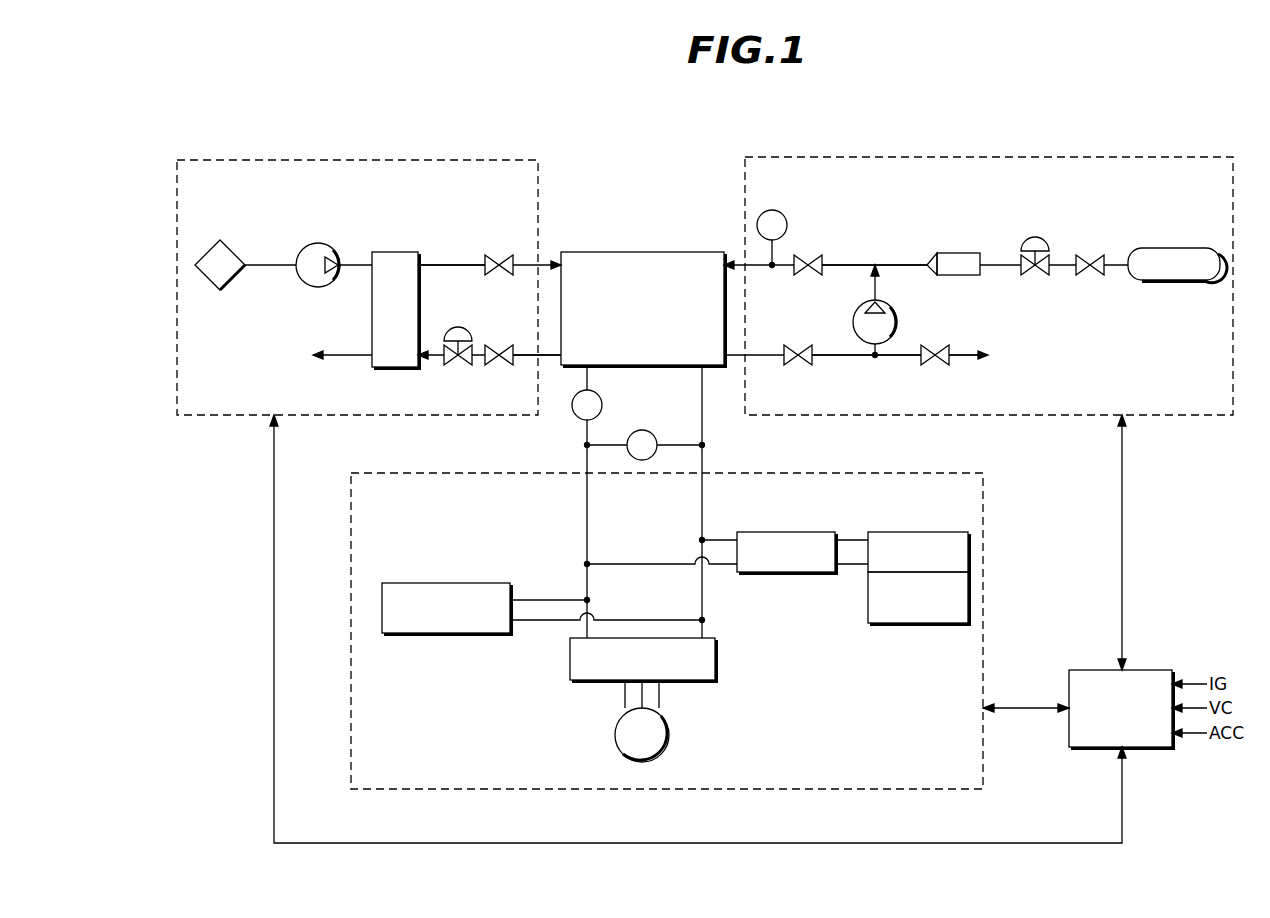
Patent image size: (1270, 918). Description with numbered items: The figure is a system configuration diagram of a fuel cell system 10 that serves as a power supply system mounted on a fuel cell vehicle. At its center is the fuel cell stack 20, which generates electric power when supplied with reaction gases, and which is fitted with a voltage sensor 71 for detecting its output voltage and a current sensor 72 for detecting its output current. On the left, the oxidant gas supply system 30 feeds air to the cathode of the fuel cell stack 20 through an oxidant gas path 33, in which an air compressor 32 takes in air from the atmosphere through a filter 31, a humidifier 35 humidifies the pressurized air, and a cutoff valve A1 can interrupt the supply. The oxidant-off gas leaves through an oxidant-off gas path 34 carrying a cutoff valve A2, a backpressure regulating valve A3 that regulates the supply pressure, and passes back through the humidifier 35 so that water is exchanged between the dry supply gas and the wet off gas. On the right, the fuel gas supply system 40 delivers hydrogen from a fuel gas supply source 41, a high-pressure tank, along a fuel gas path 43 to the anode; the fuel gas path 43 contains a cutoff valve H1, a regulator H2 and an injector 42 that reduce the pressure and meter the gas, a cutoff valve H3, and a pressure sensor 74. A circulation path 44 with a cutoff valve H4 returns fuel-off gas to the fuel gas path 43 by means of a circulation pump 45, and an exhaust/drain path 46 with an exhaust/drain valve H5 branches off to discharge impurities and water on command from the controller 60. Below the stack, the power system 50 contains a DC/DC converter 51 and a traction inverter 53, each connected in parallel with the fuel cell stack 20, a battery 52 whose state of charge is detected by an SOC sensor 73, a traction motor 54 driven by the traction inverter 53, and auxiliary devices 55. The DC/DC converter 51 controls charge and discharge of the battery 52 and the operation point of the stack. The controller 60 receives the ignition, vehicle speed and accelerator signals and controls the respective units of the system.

The fuel cell system 10 is at (1216, 128).
The fuel cell stack 20 is at (642, 252).
The oxidant gas supply system 30 is at (322, 157).
The filter 31 is at (237, 252).
The air compressor 32 is at (318, 243).
The oxidant gas path 33 is at (440, 265).
The oxidant-off gas path 34 is at (525, 355).
The humidifier 35 is at (395, 252).
The cutoff valve A1 is at (498, 255).
The cutoff valve A2 is at (498, 365).
The backpressure regulating valve A3 is at (460, 327).
The fuel gas supply system 40 is at (1070, 157).
The fuel gas supply source 41 is at (1172, 249).
The injector 42 is at (956, 253).
The fuel gas path 43 is at (850, 265).
The circulation path 44 is at (836, 355).
The circulation pump 45 is at (897, 322).
The exhaust/drain path 46 is at (960, 355).
The cutoff valve H1 is at (1090, 255).
The regulator H2 is at (1036, 237).
The cutoff valve H3 is at (810, 255).
The cutoff valve H4 is at (798, 365).
The exhaust/drain valve H5 is at (935, 365).
The power system 50 is at (983, 545).
The DC/DC converter 51 is at (785, 532).
The battery 52 is at (900, 532).
The traction inverter 53 is at (715, 660).
The traction motor 54 is at (669, 735).
The auxiliary devices 55 is at (462, 583).
The controller 60 is at (1148, 670).
The voltage sensor 71 is at (642, 430).
The current sensor 72 is at (573, 415).
The SOC sensor 73 is at (900, 623).
The pressure sensor 74 is at (772, 210).